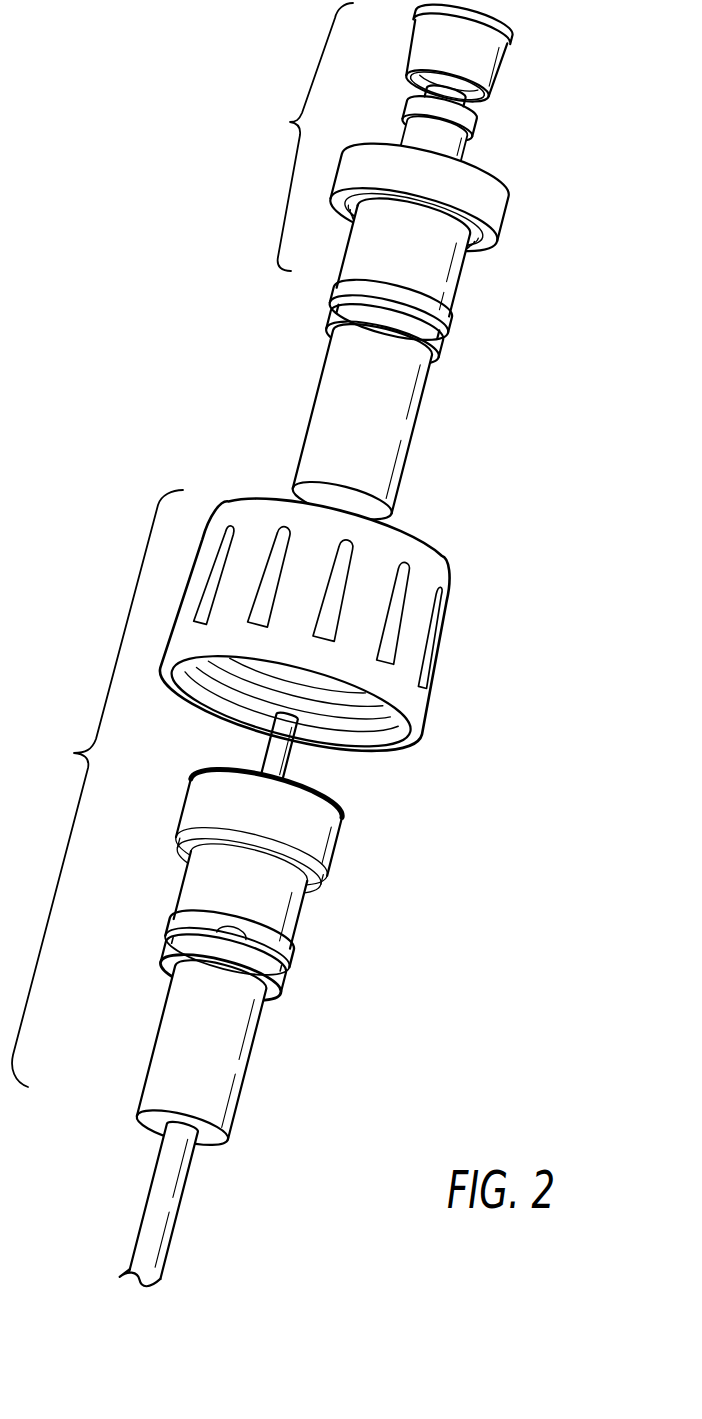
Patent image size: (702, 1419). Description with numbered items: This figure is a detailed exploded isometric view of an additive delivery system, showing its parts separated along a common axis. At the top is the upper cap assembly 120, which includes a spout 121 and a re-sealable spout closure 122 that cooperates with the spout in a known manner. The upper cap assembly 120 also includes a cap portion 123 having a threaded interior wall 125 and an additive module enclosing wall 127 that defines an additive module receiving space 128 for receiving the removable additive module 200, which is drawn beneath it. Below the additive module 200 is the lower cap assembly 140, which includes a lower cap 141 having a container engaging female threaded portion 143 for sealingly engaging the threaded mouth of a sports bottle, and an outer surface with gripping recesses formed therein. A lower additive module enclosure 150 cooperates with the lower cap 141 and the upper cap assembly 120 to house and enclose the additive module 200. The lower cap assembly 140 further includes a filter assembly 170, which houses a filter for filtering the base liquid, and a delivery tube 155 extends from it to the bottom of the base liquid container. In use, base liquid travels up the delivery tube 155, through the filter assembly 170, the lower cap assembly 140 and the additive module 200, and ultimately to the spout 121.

The upper cap assembly 120 is at (301, 137).
The spout 121 is at (473, 112).
The re-sealable spout closure 122 is at (493, 58).
The cap portion 123 is at (493, 198).
The threaded interior wall 125 is at (487, 253).
The additive module enclosing wall 127 is at (445, 280).
The additive module receiving space 128 is at (443, 330).
The additive module 200 is at (397, 413).
The lower cap assembly 140 is at (97, 788).
The lower cap 141 is at (442, 660).
The container engaging female threaded portion 143 is at (384, 734).
The lower additive module enclosure 150 is at (334, 850).
The filter assembly 170 is at (274, 1067).
The delivery tube 155 is at (177, 1190).